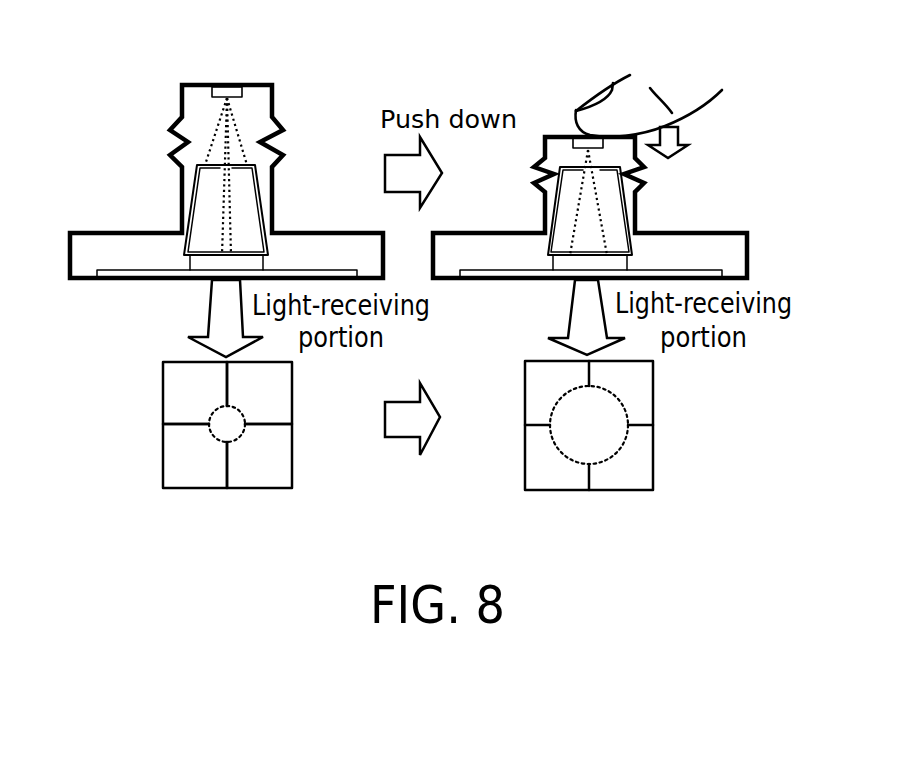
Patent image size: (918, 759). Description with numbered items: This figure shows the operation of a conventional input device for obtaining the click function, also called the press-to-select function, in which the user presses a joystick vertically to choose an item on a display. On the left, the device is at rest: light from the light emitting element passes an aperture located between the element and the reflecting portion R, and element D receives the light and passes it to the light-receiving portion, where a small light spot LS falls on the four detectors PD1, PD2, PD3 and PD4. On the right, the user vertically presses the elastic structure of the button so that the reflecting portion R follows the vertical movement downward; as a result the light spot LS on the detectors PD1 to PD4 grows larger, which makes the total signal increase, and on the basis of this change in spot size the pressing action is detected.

The reflecting portion R is at (222, 92).
The light-receiving element / detector D is at (245, 164).
The detector PD1 is at (185, 480).
The detector PD2 is at (168, 390).
The detector PD3 is at (278, 480).
The detector PD4 is at (282, 392).
The light spot LS is at (212, 435).